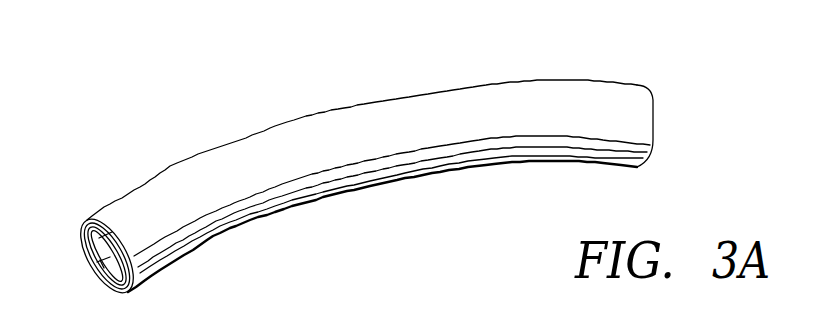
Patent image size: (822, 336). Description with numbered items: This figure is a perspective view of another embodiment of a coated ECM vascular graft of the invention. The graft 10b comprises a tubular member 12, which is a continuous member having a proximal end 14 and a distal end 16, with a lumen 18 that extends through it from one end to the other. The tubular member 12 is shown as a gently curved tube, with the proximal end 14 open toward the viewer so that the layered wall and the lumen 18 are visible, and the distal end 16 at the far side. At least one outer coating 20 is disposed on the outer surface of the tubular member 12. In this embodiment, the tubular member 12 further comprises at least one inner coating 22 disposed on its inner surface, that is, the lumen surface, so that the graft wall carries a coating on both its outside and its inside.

The graft 10b is at (412, 67).
The tubular member 12 is at (93, 260).
The proximal end 14 is at (95, 220).
The distal end 16 is at (617, 84).
The lumen 18 is at (97, 270).
The outer coating 20 is at (238, 140).
The inner coating 22 is at (107, 286).